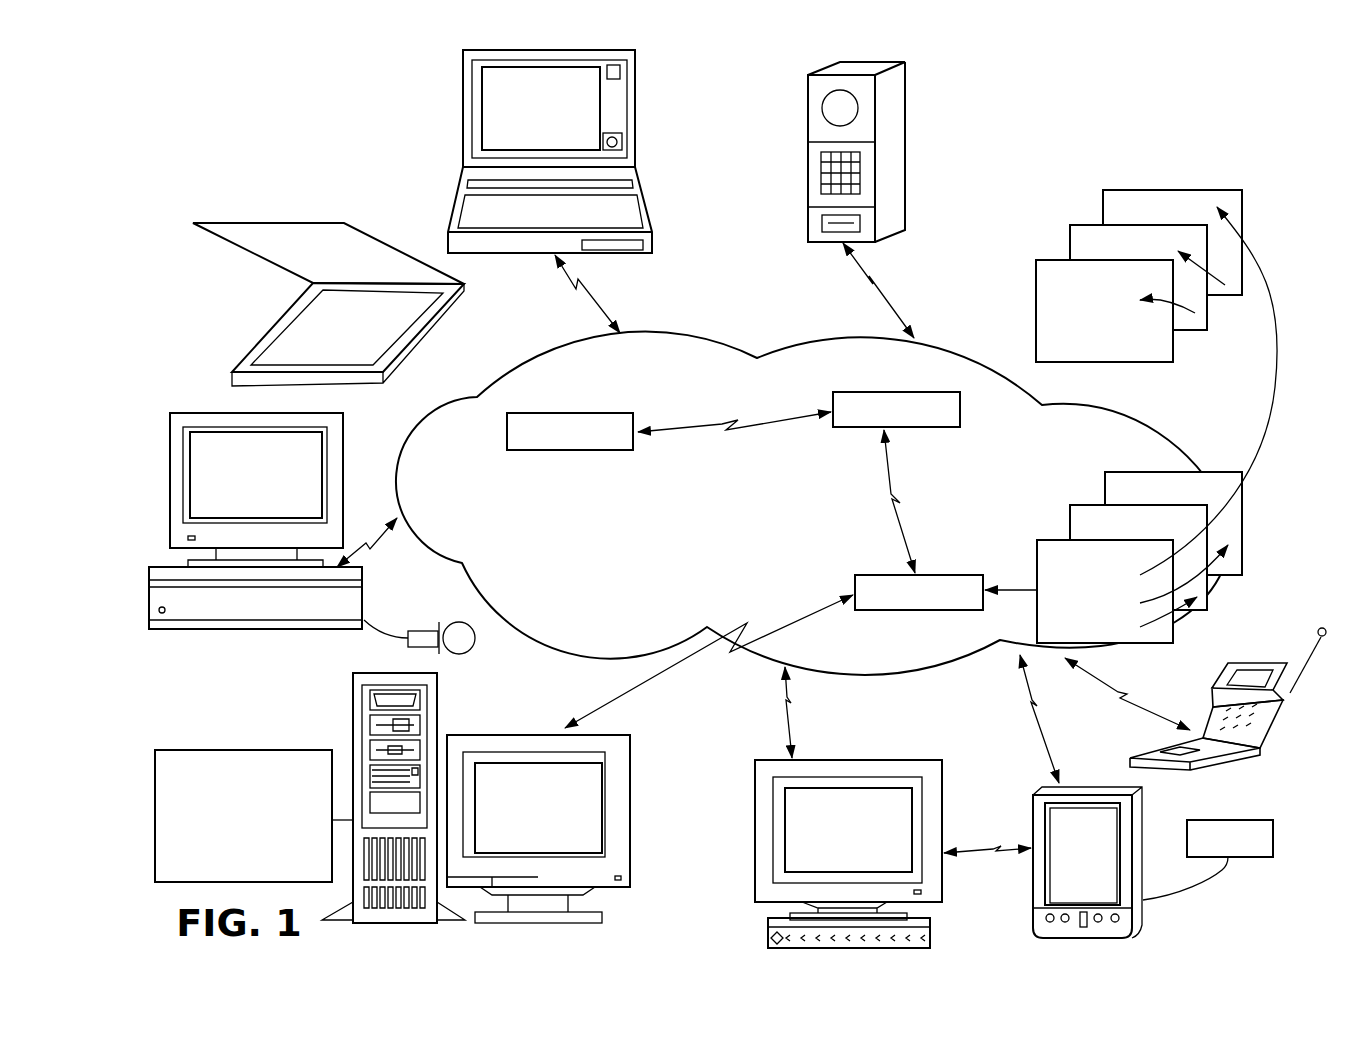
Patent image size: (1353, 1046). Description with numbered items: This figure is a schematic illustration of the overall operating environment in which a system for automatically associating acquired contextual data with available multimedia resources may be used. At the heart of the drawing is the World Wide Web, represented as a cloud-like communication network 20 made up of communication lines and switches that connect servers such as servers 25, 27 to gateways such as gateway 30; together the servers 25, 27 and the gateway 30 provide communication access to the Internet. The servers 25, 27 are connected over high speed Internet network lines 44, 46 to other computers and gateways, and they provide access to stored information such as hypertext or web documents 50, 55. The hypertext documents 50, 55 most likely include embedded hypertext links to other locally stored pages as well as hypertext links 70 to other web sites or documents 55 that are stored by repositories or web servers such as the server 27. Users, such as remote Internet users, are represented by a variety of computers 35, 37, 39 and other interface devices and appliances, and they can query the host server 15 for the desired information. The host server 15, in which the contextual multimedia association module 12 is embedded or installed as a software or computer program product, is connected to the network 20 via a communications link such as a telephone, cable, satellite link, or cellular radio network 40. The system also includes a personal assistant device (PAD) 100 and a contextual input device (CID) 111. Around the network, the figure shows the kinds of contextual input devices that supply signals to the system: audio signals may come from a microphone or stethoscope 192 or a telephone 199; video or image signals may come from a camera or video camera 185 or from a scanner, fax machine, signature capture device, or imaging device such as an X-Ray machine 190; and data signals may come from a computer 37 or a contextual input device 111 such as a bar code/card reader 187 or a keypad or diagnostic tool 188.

The contextual multimedia association module 12 is at (208, 748).
The host server 15 is at (353, 710).
The communication network 20 is at (727, 343).
The server 25 is at (897, 575).
The server 27 is at (912, 392).
The gateway 30 is at (567, 450).
The computer 35 is at (635, 127).
The computer 37 is at (912, 760).
The computer 39 is at (228, 411).
The communications link 40 is at (813, 606).
The high speed Internet network line 44 is at (903, 532).
The high speed Internet network line 46 is at (722, 424).
The hypertext documents 50 is at (1252, 548).
The hypertext documents 55 is at (1253, 216).
The hypertext links 70 is at (1277, 387).
The personal assistant device (PAD) 100 is at (1032, 825).
The contextual input device (CID) 111 is at (1275, 837).
The video camera 185 is at (808, 105).
The bar code/card reader 187 is at (808, 228).
The keypad or diagnostic tool 188 is at (808, 170).
The imaging device 190 is at (429, 339).
The microphone or stethoscope 192 is at (433, 627).
The telephone 199 is at (1207, 717).